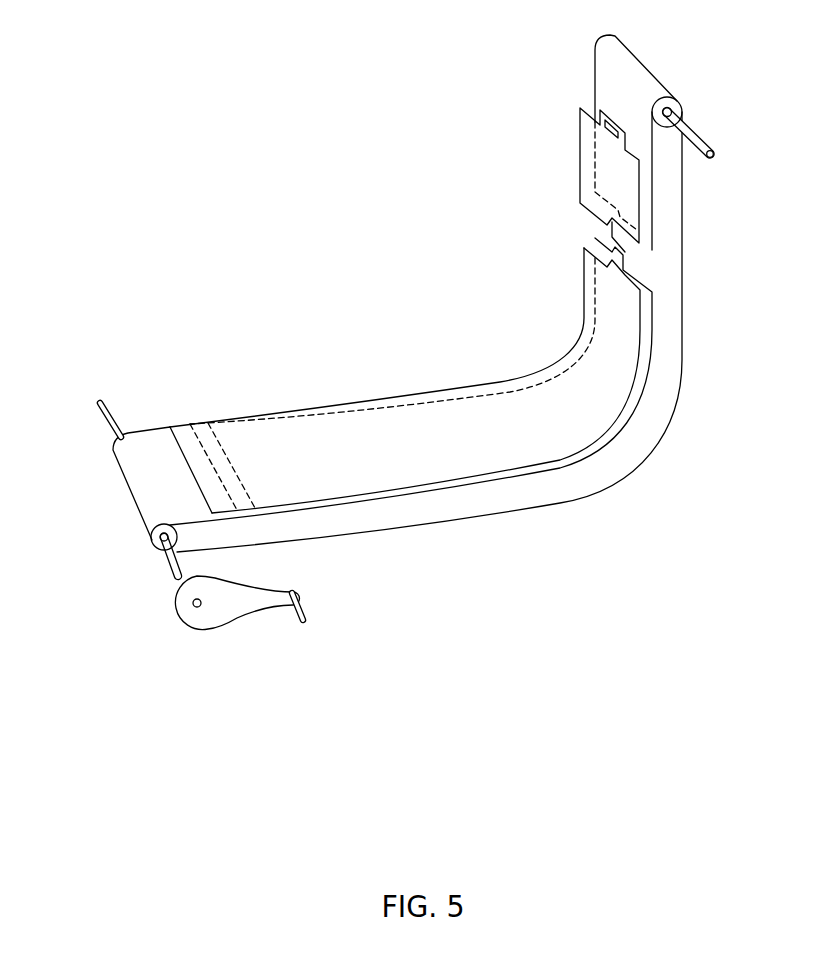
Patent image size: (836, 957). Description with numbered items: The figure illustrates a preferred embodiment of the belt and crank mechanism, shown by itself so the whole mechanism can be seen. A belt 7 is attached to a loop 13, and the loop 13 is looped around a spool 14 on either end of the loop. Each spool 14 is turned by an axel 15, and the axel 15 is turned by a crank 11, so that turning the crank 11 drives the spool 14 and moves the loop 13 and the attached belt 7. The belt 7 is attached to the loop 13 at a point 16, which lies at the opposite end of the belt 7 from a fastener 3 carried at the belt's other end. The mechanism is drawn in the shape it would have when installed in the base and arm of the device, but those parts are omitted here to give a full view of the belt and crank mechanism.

The fastener 3 is at (582, 108).
The belt 7 is at (277, 412).
The crank 11 is at (163, 602).
The loop 13 is at (682, 223).
The spool 14 is at (683, 100).
The axel 15 is at (689, 124).
The point 16 is at (198, 427).